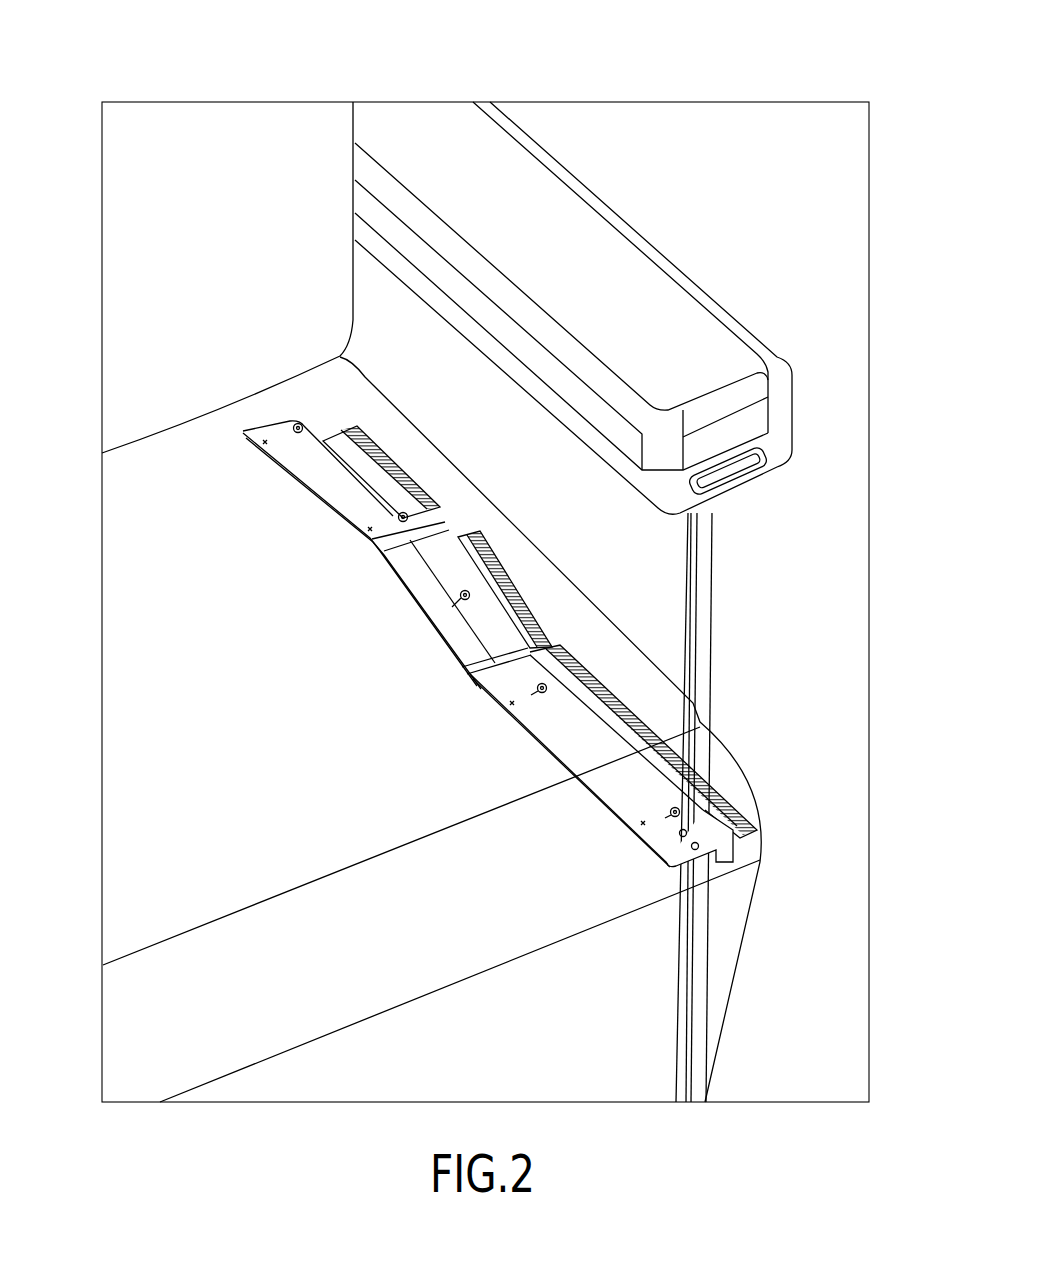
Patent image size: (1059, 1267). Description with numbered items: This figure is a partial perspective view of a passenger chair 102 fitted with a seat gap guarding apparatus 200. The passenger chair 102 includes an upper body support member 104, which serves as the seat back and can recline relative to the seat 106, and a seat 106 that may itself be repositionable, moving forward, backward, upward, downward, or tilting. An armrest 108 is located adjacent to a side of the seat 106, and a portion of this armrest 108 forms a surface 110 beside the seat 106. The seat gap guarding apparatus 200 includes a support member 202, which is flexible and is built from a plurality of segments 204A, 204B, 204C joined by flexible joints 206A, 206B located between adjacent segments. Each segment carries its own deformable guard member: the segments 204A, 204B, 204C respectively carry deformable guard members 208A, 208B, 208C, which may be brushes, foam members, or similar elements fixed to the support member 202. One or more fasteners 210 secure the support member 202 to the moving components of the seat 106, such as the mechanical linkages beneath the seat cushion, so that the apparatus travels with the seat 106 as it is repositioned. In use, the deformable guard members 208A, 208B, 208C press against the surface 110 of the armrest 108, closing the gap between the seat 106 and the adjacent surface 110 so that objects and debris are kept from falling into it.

The passenger chair 102 is at (726, 50).
The upper body support member 104 is at (228, 140).
The seat 106 is at (140, 748).
The armrest 108 is at (682, 347).
The surface 110 is at (662, 587).
The seat gap guarding apparatus 200 is at (697, 867).
The support member 202 is at (512, 703).
The segment 204A is at (320, 483).
The segment 204B is at (437, 607).
The segment 204C is at (568, 752).
The joint 206A is at (385, 553).
The joint 206B is at (463, 663).
The deformable guard member 208A is at (387, 457).
The deformable guard member 208B is at (512, 586).
The deformable guard member 208C is at (713, 793).
The fastener 210 is at (301, 424).